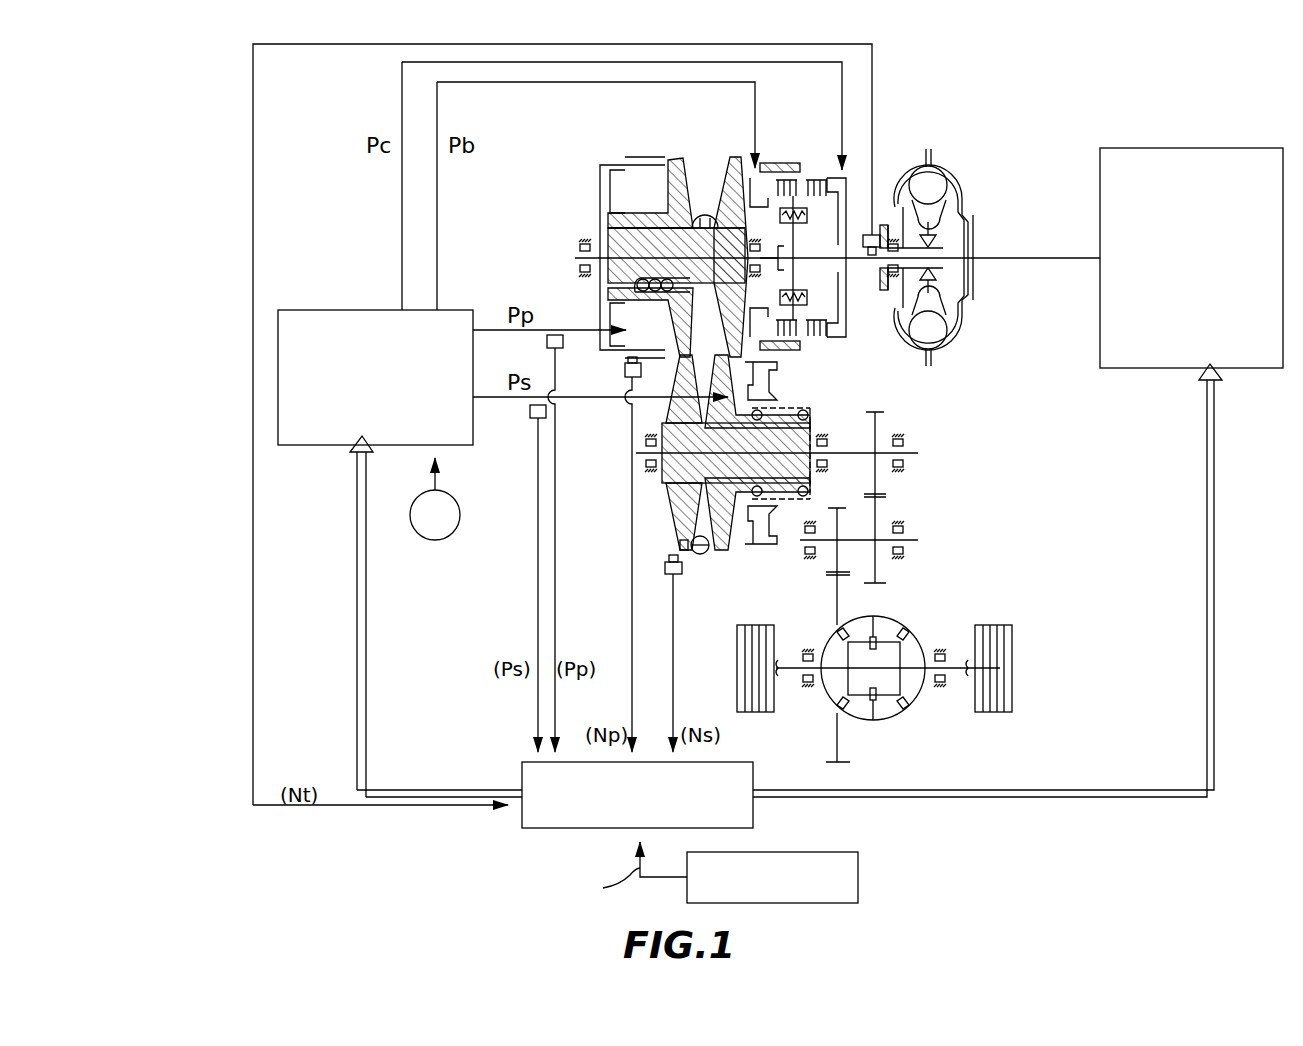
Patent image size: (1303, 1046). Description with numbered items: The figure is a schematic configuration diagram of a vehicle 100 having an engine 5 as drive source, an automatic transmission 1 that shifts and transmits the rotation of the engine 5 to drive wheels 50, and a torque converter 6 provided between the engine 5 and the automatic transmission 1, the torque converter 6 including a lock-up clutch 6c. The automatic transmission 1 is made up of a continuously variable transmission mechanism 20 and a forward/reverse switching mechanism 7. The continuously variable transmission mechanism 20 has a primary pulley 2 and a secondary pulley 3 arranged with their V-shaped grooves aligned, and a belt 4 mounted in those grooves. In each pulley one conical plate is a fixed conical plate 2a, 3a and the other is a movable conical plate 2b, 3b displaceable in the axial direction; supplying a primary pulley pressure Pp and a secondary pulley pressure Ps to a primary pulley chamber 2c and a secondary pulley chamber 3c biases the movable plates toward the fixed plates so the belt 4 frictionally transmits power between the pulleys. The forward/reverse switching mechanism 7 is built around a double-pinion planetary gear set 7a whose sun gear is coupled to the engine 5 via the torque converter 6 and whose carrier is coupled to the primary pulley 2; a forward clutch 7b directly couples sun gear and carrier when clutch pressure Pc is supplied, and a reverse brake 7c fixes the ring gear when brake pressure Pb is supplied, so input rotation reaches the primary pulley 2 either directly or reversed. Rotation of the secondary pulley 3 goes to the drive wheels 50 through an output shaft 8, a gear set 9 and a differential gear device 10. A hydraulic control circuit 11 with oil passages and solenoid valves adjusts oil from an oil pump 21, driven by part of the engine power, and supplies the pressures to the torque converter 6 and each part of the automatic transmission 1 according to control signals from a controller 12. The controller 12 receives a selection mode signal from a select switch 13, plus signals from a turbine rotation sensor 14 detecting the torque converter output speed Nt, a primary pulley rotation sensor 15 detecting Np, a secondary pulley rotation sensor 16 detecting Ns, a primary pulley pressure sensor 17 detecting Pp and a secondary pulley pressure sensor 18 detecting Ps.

The vehicle 100 is at (210, 155).
The automatic transmission 1 is at (538, 243).
The primary pulley 2 is at (725, 160).
The fixed conical plate 2a is at (745, 160).
The movable conical plate 2b is at (700, 165).
The primary pulley chamber 2c is at (628, 194).
The secondary pulley 3 is at (772, 553).
The fixed conical plate 3a is at (678, 510).
The movable conical plate 3b is at (727, 552).
The secondary pulley chamber 3c is at (742, 540).
The belt 4 is at (705, 212).
The engine 5 is at (1180, 148).
The torque converter 6 is at (930, 150).
The lock-up clutch 6c is at (966, 242).
The forward/reverse switching mechanism 7 is at (768, 165).
The double-pinion planetary gear set 7a is at (806, 178).
The forward clutch 7b is at (820, 178).
The reverse brake 7c is at (786, 178).
The output shaft 8 is at (852, 452).
The gear set 9 is at (922, 487).
The differential gear device 10 is at (918, 622).
The hydraulic control circuit 11 is at (337, 310).
The controller 12 is at (522, 780).
The select switch 13 is at (770, 852).
The turbine rotation sensor 14 is at (878, 235).
The primary pulley rotation sensor 15 is at (624, 371).
The secondary pulley rotation sensor 16 is at (682, 572).
The primary pulley pressure sensor 17 is at (547, 341).
The secondary pulley pressure sensor 18 is at (534, 418).
The continuously variable transmission mechanism 20 is at (596, 150).
The oil pump 21 is at (450, 538).
The drive wheels 50 is at (737, 660).